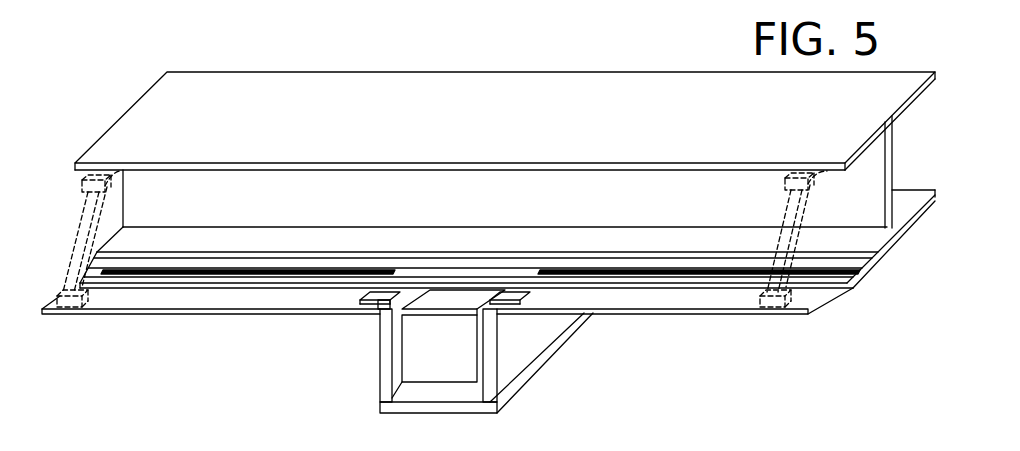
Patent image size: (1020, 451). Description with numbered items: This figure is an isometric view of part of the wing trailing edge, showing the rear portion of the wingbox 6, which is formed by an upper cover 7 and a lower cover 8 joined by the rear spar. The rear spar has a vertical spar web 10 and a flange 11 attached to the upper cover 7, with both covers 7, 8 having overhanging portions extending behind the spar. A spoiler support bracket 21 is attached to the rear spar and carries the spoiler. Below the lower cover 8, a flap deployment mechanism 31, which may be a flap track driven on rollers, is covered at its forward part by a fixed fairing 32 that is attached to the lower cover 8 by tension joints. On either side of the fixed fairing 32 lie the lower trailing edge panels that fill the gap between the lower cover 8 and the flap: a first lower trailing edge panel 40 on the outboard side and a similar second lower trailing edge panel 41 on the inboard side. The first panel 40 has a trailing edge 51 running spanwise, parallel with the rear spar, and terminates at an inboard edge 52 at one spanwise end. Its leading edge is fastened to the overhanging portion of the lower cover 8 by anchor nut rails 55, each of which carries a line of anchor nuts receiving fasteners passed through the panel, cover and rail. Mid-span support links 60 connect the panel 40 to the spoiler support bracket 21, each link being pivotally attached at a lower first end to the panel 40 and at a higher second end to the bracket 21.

The wingbox 6 is at (505, 89).
The upper cover 7 is at (645, 107).
The lower cover 8 is at (843, 291).
The spar web 10 is at (855, 182).
The flange 11 is at (520, 243).
The spoiler support bracket 21 is at (96, 176).
The deployment mechanism 31 is at (445, 298).
The fixed fairing 32 is at (517, 353).
The first lower trailing edge panel 40 is at (287, 300).
The second lower trailing edge panel 41 is at (608, 295).
The trailing edge 51 is at (172, 315).
The inboard edge 52 is at (365, 300).
The anchor nut rail 55 is at (222, 268).
The mid-span support link 60 is at (80, 235).